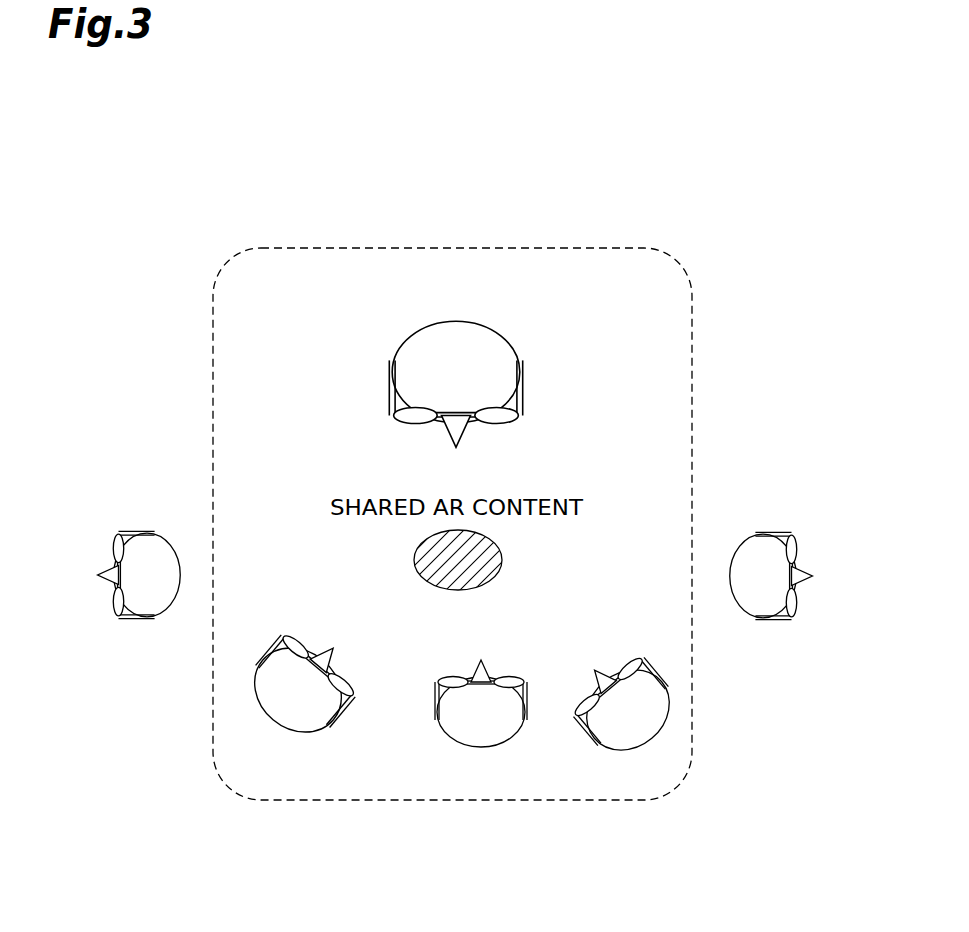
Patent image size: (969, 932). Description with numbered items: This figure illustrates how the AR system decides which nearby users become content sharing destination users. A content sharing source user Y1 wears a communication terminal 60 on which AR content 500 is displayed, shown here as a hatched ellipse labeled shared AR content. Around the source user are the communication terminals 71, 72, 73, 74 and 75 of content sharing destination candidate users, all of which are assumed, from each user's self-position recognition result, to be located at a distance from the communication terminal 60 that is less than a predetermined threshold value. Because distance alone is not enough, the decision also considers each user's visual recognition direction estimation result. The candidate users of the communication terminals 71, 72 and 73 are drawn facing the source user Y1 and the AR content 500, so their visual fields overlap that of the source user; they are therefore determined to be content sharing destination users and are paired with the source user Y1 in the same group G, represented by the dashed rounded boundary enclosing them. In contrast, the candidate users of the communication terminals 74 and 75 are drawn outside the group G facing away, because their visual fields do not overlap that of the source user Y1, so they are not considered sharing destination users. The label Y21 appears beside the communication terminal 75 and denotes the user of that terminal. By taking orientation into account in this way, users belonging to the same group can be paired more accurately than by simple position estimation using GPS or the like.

The group G is at (572, 247).
The content sharing source user Y1 is at (509, 359).
The communication terminal 60 is at (521, 413).
The AR content 500 is at (503, 558).
The communication terminal 71 is at (292, 646).
The communication terminal 72 is at (455, 677).
The communication terminal 73 is at (588, 693).
The communication terminal 74 is at (124, 530).
The communication terminal 75 is at (780, 570).
The second user Y21 is at (733, 592).